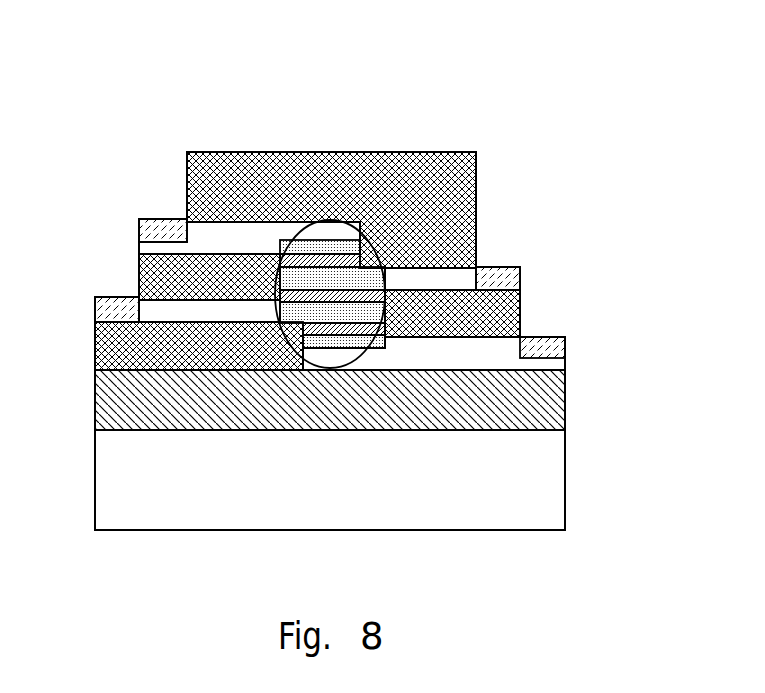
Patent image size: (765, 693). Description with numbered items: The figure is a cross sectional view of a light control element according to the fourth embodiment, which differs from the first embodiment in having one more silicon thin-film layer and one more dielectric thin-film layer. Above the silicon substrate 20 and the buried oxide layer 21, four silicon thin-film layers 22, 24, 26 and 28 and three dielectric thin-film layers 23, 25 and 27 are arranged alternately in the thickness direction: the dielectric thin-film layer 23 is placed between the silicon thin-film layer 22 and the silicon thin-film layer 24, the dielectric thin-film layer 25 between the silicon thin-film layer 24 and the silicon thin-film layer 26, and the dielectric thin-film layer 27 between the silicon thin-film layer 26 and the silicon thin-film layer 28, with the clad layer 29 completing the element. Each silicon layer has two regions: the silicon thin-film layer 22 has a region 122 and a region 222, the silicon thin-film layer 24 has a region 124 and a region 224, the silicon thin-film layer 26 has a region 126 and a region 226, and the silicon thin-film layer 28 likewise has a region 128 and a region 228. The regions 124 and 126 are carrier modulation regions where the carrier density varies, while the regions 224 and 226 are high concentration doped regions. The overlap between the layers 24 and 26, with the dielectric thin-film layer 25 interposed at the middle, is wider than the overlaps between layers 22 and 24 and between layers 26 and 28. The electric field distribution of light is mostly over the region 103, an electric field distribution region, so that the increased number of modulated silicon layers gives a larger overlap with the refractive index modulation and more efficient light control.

The silicon substrate 20 is at (548, 472).
The buried oxide layer 21 is at (567, 397).
The silicon thin-film layer 22 is at (443, 358).
The region 122 is at (351, 334).
The region 222 is at (567, 344).
The dielectric thin-film layer 23 is at (328, 343).
The silicon thin-film layer 24 is at (165, 312).
The region 124 is at (278, 306).
The region 224 is at (95, 296).
The dielectric thin-film layer 25 is at (254, 333).
The silicon thin-film layer 26 is at (433, 278).
The region 126 is at (370, 280).
The region 226 is at (522, 273).
The dielectric thin-film layer 27 is at (323, 250).
The silicon thin-film layer 28 is at (218, 242).
The region 128 is at (300, 222).
The region 228 is at (148, 218).
The clad layer 29 is at (477, 203).
The region 103 is at (350, 235).